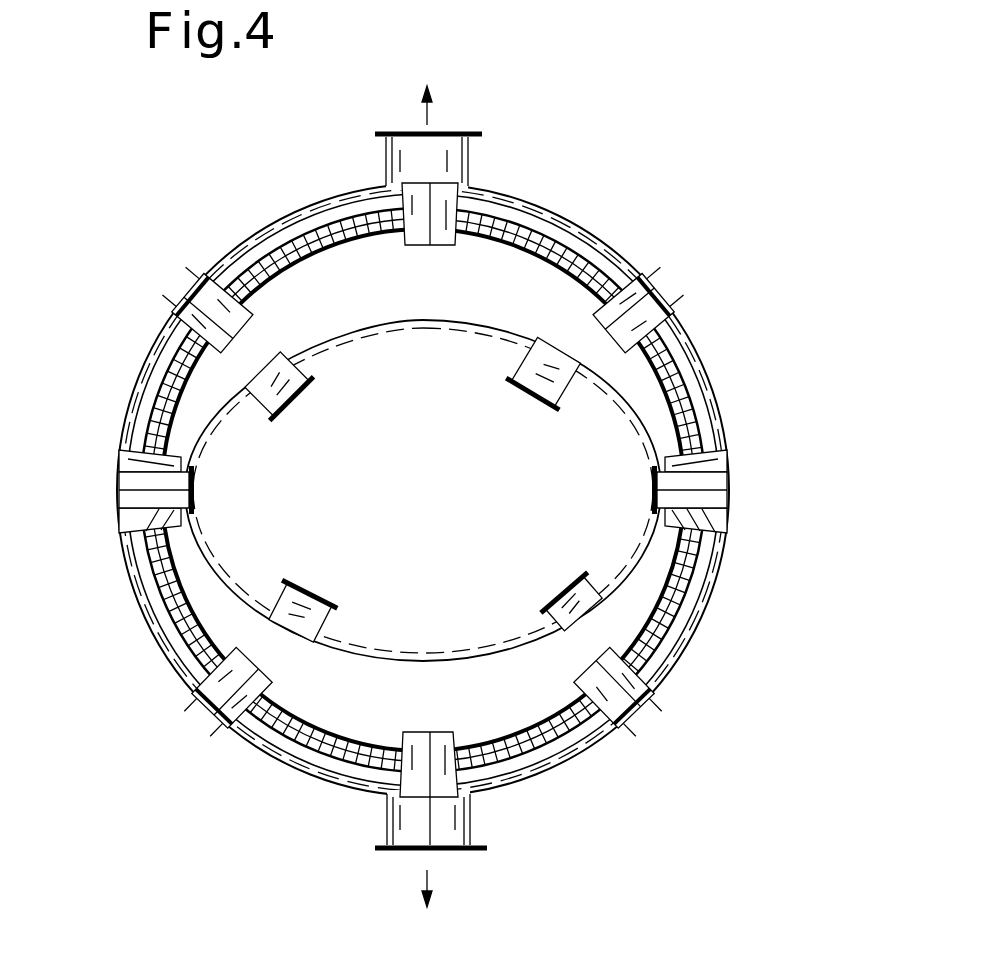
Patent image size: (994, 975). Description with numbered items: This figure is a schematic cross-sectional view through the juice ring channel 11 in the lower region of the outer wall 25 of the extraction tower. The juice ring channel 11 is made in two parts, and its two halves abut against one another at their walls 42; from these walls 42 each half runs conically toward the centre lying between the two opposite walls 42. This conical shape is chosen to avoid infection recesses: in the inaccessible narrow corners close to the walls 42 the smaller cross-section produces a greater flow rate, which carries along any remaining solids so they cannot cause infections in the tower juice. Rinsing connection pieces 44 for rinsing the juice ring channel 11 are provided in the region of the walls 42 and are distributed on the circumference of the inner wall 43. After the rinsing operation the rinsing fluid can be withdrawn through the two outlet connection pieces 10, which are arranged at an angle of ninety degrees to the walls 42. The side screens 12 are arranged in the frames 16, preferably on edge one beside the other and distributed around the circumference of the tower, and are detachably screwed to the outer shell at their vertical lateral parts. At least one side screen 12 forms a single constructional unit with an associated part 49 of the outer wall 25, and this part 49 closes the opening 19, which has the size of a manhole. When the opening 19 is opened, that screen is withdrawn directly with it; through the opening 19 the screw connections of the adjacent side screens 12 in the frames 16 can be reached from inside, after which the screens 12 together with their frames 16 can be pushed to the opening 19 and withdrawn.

The outlet connection piece 10 is at (405, 157).
The juice ring channel 11 is at (580, 312).
The side screen 12 is at (690, 410).
The frame 16 is at (723, 445).
The opening 19 is at (693, 348).
The outer wall 25 is at (539, 218).
The wall 42 is at (727, 468).
The inner wall 43 is at (493, 342).
The rinsing connection piece 44 is at (697, 502).
The part of the outer wall 49 is at (705, 600).